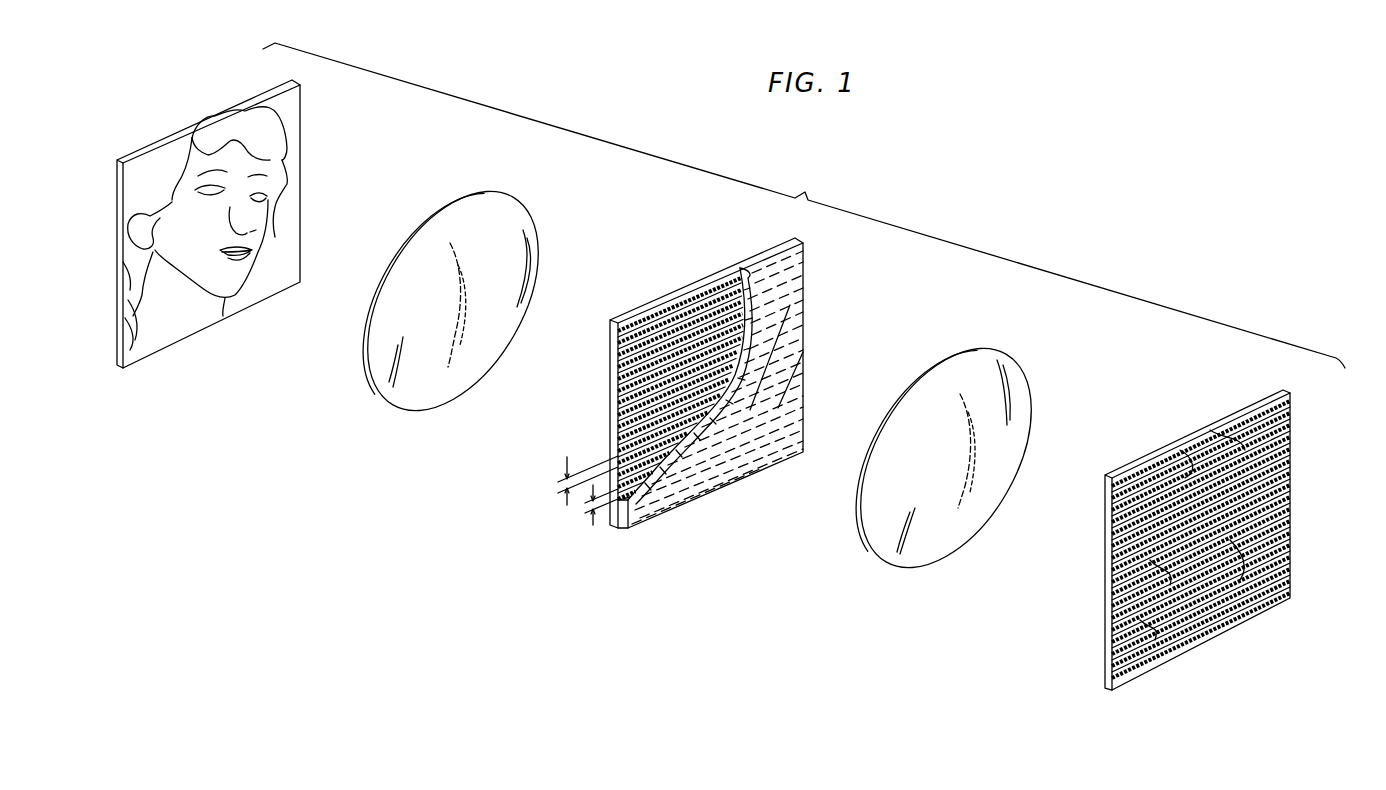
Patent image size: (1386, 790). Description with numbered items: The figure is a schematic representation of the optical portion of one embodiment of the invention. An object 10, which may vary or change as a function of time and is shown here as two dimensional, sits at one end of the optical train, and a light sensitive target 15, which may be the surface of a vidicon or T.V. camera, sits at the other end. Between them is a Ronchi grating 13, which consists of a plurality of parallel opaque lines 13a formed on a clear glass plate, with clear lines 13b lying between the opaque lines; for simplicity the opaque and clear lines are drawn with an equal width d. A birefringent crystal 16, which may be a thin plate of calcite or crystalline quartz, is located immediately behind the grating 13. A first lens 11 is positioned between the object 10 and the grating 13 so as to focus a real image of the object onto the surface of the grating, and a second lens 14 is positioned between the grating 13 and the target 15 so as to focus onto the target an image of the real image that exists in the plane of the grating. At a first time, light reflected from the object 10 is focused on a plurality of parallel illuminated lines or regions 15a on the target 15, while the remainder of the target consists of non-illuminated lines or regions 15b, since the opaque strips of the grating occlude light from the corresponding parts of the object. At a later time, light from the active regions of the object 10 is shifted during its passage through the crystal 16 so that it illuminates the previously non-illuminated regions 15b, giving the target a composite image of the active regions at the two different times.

The object 10 is at (180, 340).
The first lens 11 is at (430, 410).
The Ronchi grating 13 is at (677, 414).
The opaque lines 13a is at (587, 375).
The clear lines 13b is at (587, 415).
The second lens 14 is at (915, 567).
The light sensitive target 15 is at (1204, 527).
The illuminated lines or regions 15a is at (1084, 533).
The non-illuminated lines or regions 15b is at (1326, 410).
The birefringent crystal 16 is at (628, 530).